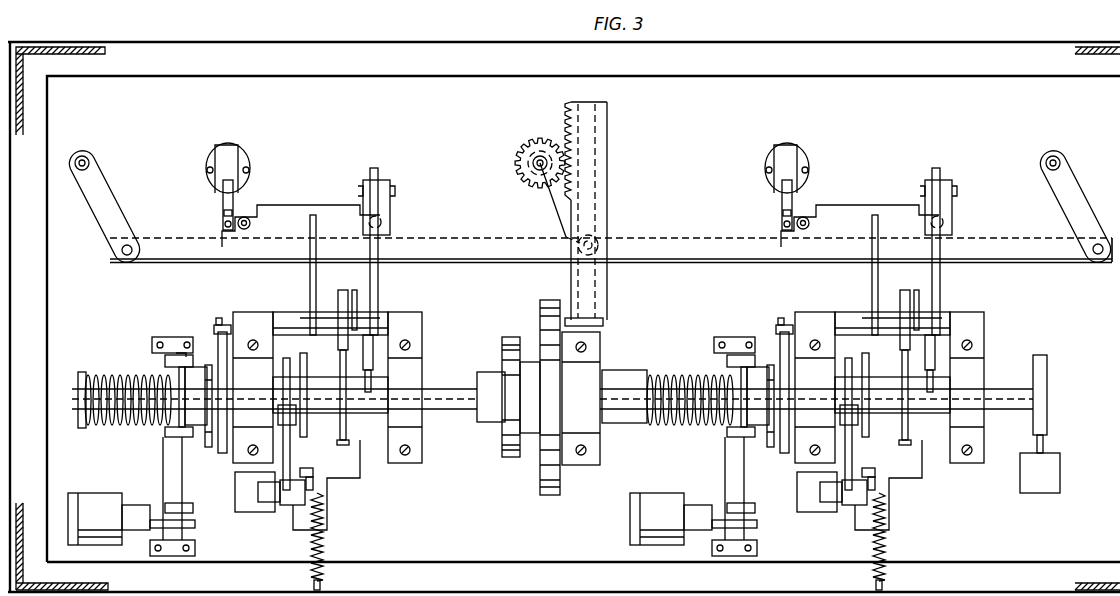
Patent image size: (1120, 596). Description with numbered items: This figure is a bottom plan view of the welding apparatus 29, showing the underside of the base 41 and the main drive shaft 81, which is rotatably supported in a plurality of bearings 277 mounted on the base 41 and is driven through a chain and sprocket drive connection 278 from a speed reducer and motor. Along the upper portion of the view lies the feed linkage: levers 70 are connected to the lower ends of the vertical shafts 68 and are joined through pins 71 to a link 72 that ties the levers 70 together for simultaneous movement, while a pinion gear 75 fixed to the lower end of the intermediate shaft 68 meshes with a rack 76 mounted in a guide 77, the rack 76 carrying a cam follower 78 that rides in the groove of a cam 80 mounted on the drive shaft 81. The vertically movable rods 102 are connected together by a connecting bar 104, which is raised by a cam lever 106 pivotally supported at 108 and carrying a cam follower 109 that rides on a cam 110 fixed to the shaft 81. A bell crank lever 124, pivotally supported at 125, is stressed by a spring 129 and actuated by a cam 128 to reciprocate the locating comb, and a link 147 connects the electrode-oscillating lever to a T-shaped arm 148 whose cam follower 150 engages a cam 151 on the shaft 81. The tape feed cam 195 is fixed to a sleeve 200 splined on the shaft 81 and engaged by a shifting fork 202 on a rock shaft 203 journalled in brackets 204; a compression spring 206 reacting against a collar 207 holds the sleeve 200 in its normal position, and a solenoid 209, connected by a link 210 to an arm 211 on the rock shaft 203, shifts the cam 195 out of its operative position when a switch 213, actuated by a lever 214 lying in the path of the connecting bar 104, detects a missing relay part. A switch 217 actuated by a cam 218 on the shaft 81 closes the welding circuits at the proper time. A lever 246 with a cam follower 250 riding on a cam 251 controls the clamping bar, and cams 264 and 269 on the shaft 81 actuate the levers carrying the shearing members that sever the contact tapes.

The welding apparatus 29 is at (235, 28).
The base 41 is at (349, 93).
The vertical shafts 68 is at (89, 154).
The levers 70 is at (104, 200).
The pins 71 is at (125, 256).
The link 72 is at (150, 245).
The pinion gear 75 is at (524, 140).
The rack 76 is at (564, 110).
The guide 77 is at (608, 138).
The cam follower 78 is at (552, 298).
The cam 80 is at (541, 304).
The drive shaft 81 is at (457, 386).
The vertically movable rods 102 is at (244, 216).
The connecting bar 104 is at (284, 210).
The cam lever 106 is at (317, 300).
The pivot support 108 is at (296, 302).
The cam follower 109 is at (349, 304).
The cam 110 is at (352, 432).
The bell crank lever 124 is at (294, 478).
The pivot support 125 is at (288, 502).
The cam 128 is at (303, 358).
The spring 129 is at (323, 540).
The link 147 is at (380, 272).
The T-shaped arm 148 is at (358, 315).
The cam follower 150 is at (384, 340).
The cam 151 is at (380, 378).
The cam 195 is at (210, 447).
The sleeve 200 is at (200, 366).
The shifting fork 202 is at (164, 361).
The rock shaft 203 is at (164, 490).
The brackets 204 is at (156, 340).
The compression spring 206 is at (124, 432).
The collar 207 is at (76, 372).
The solenoid 209 is at (98, 496).
The link 210 is at (194, 522).
The arm 211 is at (190, 513).
The switch 213 is at (246, 150).
The lever 214 is at (222, 205).
The switch 217 is at (1040, 494).
The cam 218 is at (1048, 372).
The lever 246 is at (222, 326).
The cam follower 250 is at (236, 330).
The cam 251 is at (216, 320).
The cam 264 is at (298, 442).
The cam 269 is at (308, 316).
The bearings 277 is at (244, 433).
The chain and sprocket drive connection 278 is at (516, 328).